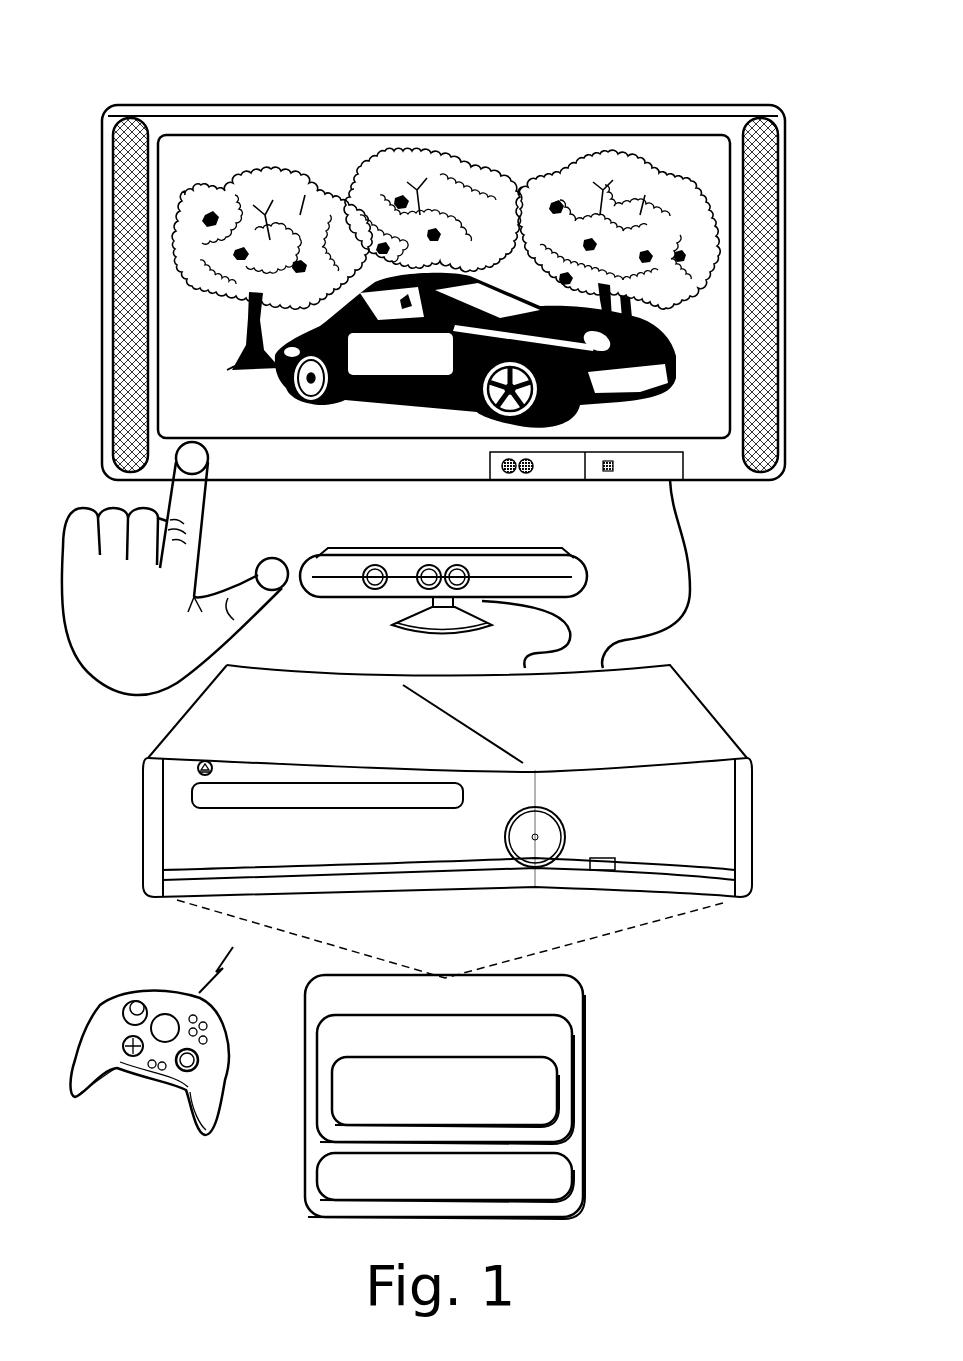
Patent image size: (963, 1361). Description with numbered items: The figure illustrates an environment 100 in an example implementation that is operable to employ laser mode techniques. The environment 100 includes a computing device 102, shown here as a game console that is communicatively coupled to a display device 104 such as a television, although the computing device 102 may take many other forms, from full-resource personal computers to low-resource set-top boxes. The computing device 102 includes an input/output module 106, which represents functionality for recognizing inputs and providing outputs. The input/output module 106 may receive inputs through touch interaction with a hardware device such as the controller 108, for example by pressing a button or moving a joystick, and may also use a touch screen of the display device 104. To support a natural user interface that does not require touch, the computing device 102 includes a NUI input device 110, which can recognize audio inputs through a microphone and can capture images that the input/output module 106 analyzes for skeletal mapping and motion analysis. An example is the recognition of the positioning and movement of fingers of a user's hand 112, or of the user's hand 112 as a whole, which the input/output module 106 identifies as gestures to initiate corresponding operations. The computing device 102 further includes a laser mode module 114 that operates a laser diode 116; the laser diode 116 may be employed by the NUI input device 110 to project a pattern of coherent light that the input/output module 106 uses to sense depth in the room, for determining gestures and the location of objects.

The environment 100 is at (143, 62).
The computing device 102 is at (529, 1007).
The display device 104 is at (206, 166).
The input/output module 106 is at (562, 1047).
The controller 108 is at (137, 990).
The NUI input device 110 is at (442, 548).
The user's hand 112 is at (142, 654).
The laser mode module 114 is at (498, 1112).
The laser diode 116 is at (522, 1187).